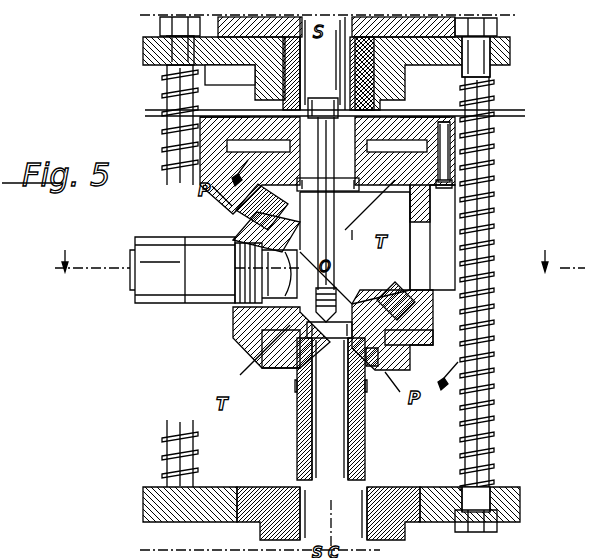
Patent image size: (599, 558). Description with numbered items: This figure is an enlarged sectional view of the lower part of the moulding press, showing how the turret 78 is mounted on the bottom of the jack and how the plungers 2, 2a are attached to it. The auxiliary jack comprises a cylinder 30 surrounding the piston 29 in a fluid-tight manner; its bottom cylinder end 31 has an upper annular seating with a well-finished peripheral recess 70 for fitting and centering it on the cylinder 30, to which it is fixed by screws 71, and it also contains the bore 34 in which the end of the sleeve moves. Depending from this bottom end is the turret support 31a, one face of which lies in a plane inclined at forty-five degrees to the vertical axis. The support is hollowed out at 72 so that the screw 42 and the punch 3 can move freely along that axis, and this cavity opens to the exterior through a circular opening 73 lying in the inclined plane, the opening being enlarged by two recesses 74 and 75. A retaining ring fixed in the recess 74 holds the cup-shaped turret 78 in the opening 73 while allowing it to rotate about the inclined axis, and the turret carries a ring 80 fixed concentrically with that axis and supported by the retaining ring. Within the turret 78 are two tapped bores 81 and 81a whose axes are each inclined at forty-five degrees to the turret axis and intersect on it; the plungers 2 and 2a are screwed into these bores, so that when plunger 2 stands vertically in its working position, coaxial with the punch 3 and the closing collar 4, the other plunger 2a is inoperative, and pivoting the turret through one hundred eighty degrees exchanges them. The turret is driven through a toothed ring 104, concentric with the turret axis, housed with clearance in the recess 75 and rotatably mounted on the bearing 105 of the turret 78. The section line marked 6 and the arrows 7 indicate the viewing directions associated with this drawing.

The plunger 2 is at (366, 428).
The plunger 2a is at (170, 305).
The punch 3 is at (337, 299).
The closing collar 4 is at (414, 516).
The section line 6- 6 is at (320, 273).
The direction arrow 7 is at (345, 283).
The piston 29 is at (413, 118).
The cylinder 30 is at (215, 118).
The cylinder end 31 is at (378, 194).
The turret support 31a is at (408, 255).
The bore 34 is at (365, 162).
The screw 42 is at (306, 58).
The peripheral recess 70 is at (222, 152).
The screws 71 is at (432, 160).
The hollowed-out cavity 72 is at (432, 237).
The circular opening 73 is at (400, 295).
The recess 74 is at (430, 326).
The recess 75 is at (410, 344).
The turret 78 is at (252, 340).
The ring 80 is at (266, 232).
The tapped bore 81 is at (281, 349).
The tapped bore 81a is at (242, 292).
The toothed ring 104 is at (379, 366).
The bearing 105 is at (265, 200).